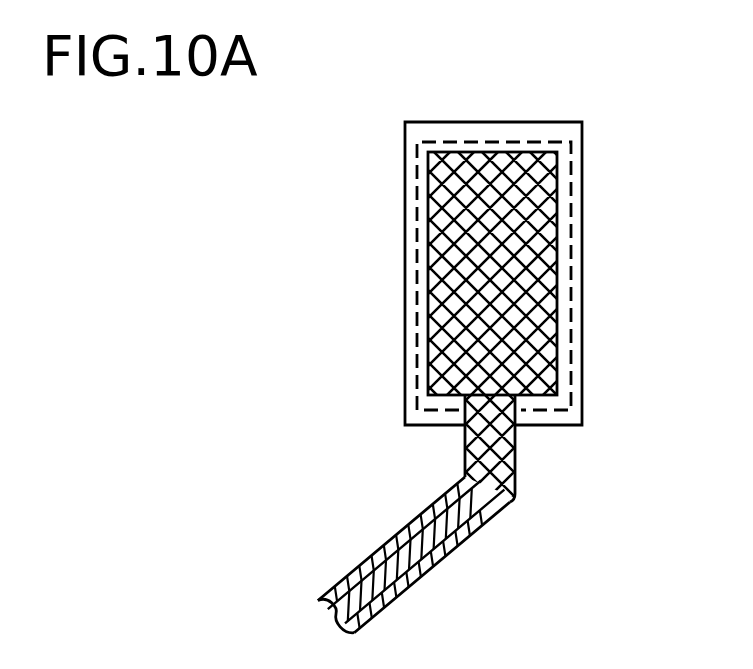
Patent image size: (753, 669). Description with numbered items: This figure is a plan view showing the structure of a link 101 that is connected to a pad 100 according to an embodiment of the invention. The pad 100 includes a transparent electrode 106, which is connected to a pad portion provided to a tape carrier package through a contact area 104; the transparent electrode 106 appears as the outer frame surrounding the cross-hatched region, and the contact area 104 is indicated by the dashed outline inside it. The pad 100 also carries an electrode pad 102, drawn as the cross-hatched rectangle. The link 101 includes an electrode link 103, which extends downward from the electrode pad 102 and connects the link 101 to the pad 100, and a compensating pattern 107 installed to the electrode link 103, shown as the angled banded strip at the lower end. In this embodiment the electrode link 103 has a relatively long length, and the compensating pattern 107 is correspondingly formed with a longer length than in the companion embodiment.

The pad 100 is at (550, 92).
The link 101 is at (560, 518).
The electrode pad 102 is at (555, 320).
The electrode link 103 is at (515, 455).
The contact area 104 is at (571, 370).
The transparent electrode 106 is at (405, 283).
The compensating pattern 107 is at (427, 548).